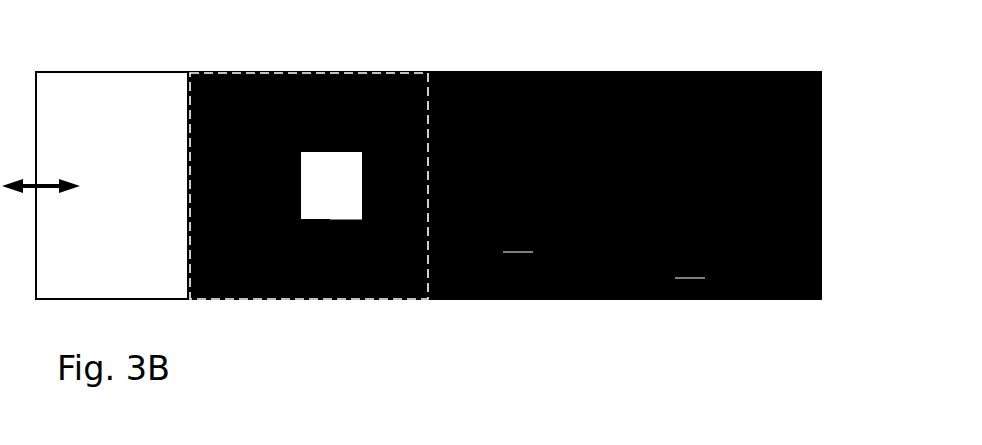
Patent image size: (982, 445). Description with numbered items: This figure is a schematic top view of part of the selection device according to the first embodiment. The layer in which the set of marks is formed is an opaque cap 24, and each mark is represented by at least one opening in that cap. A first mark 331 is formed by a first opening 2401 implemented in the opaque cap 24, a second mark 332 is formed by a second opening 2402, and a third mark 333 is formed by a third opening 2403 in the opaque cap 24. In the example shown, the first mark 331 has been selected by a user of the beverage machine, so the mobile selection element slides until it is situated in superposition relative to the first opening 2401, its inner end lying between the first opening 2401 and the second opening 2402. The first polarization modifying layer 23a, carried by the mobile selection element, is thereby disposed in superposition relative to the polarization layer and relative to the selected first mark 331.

The opaque cap 24 is at (792, 70).
The first polarization modifying layer 23a is at (94, 113).
The first opening 2401 is at (308, 228).
The second opening 2402 is at (482, 258).
The third opening 2403 is at (648, 284).
The first mark 331 is at (345, 221).
The second mark 332 is at (522, 253).
The third mark 333 is at (688, 279).